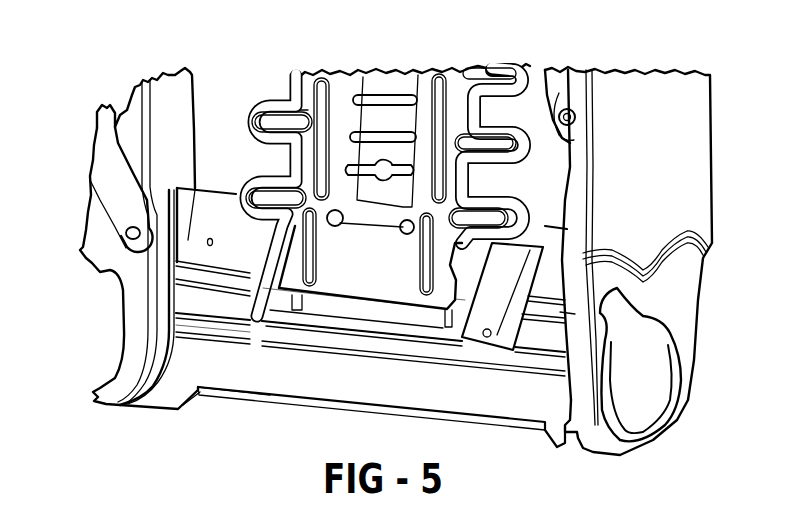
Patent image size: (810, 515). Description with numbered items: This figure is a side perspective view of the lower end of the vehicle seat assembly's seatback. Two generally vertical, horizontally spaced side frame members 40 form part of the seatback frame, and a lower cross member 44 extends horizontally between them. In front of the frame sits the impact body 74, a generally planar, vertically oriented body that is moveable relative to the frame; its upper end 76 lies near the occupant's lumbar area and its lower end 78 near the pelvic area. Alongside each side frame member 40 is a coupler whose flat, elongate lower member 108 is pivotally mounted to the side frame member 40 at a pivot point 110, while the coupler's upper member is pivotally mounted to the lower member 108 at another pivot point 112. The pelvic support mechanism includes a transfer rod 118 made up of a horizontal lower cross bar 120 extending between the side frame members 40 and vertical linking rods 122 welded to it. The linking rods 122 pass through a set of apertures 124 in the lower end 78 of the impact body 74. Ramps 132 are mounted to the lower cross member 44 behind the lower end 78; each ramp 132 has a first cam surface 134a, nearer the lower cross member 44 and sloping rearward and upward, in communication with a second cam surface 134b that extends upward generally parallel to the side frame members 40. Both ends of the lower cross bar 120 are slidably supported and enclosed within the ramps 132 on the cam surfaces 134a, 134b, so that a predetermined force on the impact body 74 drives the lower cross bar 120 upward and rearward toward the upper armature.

The side frame member 40 is at (167, 108).
The lower cross member 44 is at (377, 388).
The impact body 74 is at (360, 238).
The upper end 76 is at (390, 117).
The lower end 78 is at (348, 262).
The lower member 108 is at (100, 168).
The pivot point 110 is at (127, 237).
The pivot point 112 is at (572, 117).
The transfer rod 118 is at (348, 323).
The lower cross bar 120 is at (410, 335).
The linking rod 122 is at (268, 302).
The aperture 124 is at (300, 350).
The ramp 132 is at (577, 317).
The first cam surface 134a is at (563, 310).
The second cam surface 134b is at (527, 258).